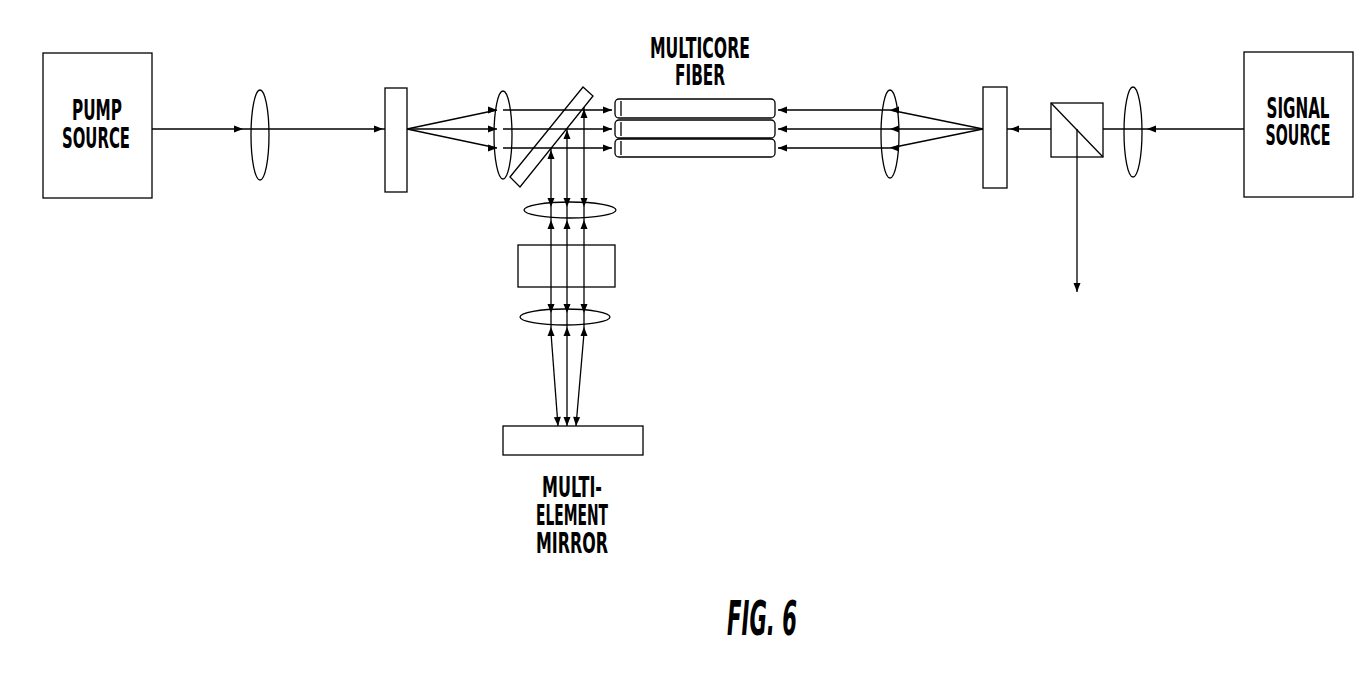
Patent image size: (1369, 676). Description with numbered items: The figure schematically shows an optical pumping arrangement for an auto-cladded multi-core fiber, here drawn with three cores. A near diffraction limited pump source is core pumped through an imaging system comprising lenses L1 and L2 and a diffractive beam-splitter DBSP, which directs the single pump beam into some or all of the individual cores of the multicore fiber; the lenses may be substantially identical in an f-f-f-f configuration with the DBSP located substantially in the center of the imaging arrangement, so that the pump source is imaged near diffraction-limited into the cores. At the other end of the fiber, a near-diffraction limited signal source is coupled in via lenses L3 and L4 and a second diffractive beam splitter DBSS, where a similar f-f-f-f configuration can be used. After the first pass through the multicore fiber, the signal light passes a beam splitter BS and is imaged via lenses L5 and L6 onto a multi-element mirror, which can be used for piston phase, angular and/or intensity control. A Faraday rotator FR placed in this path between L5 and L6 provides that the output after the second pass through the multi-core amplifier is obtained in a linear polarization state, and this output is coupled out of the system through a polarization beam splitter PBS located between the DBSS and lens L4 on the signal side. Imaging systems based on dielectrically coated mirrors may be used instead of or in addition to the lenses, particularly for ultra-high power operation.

The lens L1 is at (249, 152).
The lens L2 is at (495, 154).
The lens L3 is at (894, 157).
The lens L4 is at (1136, 155).
The lens L5 is at (581, 213).
The lens L6 is at (579, 317).
The diffractive beam-splitter DBSP is at (396, 122).
The second diffractive beam splitter DBSS is at (997, 119).
The beam splitter BS is at (551, 121).
The polarization beam splitter PBS is at (1077, 181).
The Faraday rotator FR is at (546, 266).